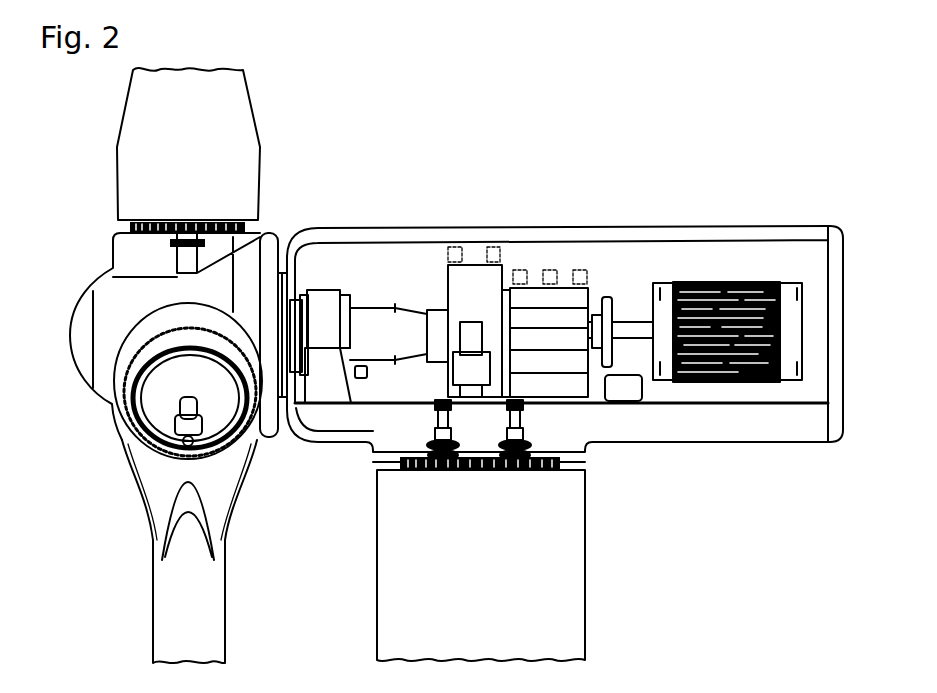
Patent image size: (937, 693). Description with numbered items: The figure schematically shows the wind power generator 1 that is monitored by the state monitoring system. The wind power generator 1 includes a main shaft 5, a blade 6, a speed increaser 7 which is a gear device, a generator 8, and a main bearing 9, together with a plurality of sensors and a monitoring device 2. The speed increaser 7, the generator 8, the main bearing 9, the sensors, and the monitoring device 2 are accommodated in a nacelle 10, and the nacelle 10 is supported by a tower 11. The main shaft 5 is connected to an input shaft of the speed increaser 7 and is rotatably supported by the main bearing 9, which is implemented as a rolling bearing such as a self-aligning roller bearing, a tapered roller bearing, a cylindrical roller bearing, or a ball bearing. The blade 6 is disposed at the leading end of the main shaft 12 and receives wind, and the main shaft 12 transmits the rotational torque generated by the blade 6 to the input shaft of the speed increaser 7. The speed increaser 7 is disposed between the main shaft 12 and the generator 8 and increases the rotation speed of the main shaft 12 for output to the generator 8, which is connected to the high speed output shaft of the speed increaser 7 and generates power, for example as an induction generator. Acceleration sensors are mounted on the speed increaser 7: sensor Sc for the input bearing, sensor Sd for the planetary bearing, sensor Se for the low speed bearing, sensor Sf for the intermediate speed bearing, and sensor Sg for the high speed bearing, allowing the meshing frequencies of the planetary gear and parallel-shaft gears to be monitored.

The wind power generator 1 is at (565, 300).
The monitoring device 2 is at (627, 395).
The main shaft 5 is at (103, 310).
The blade 6 is at (235, 118).
The speed increaser 7 is at (513, 249).
The generator 8 is at (727, 280).
The main bearing 9 is at (322, 290).
The nacelle 10 is at (683, 230).
The tower 11 is at (567, 581).
The main shaft 12 is at (370, 317).
The acceleration sensor Sc is at (452, 247).
The acceleration sensor Sd is at (492, 247).
The acceleration sensor Se is at (520, 270).
The acceleration sensor Sf is at (550, 270).
The acceleration sensor Sg is at (580, 270).